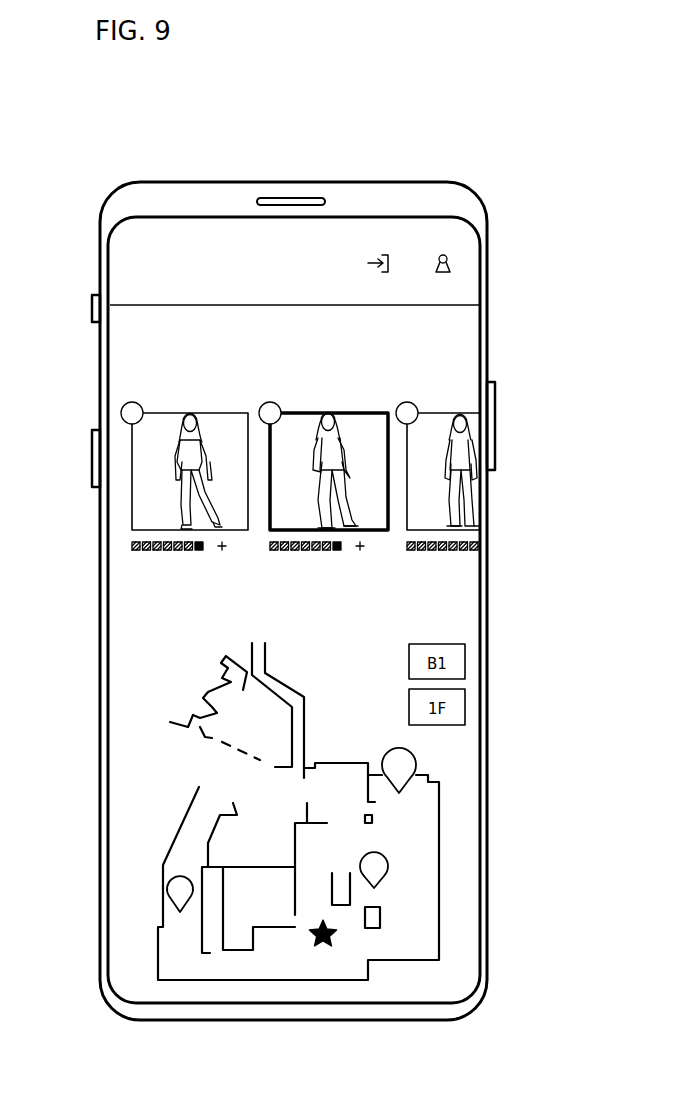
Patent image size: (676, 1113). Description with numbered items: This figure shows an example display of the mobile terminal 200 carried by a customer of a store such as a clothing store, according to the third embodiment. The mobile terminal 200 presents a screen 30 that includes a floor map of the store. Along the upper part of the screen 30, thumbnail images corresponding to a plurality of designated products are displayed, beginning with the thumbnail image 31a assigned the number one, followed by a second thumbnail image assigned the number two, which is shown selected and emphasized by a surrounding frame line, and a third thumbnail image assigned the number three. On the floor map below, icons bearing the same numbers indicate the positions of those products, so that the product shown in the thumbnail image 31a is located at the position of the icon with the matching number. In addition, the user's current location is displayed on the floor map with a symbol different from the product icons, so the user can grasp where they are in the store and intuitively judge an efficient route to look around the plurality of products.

The mobile terminal 200 is at (446, 180).
The screen 30 is at (397, 357).
The thumbnail image 31a is at (153, 467).